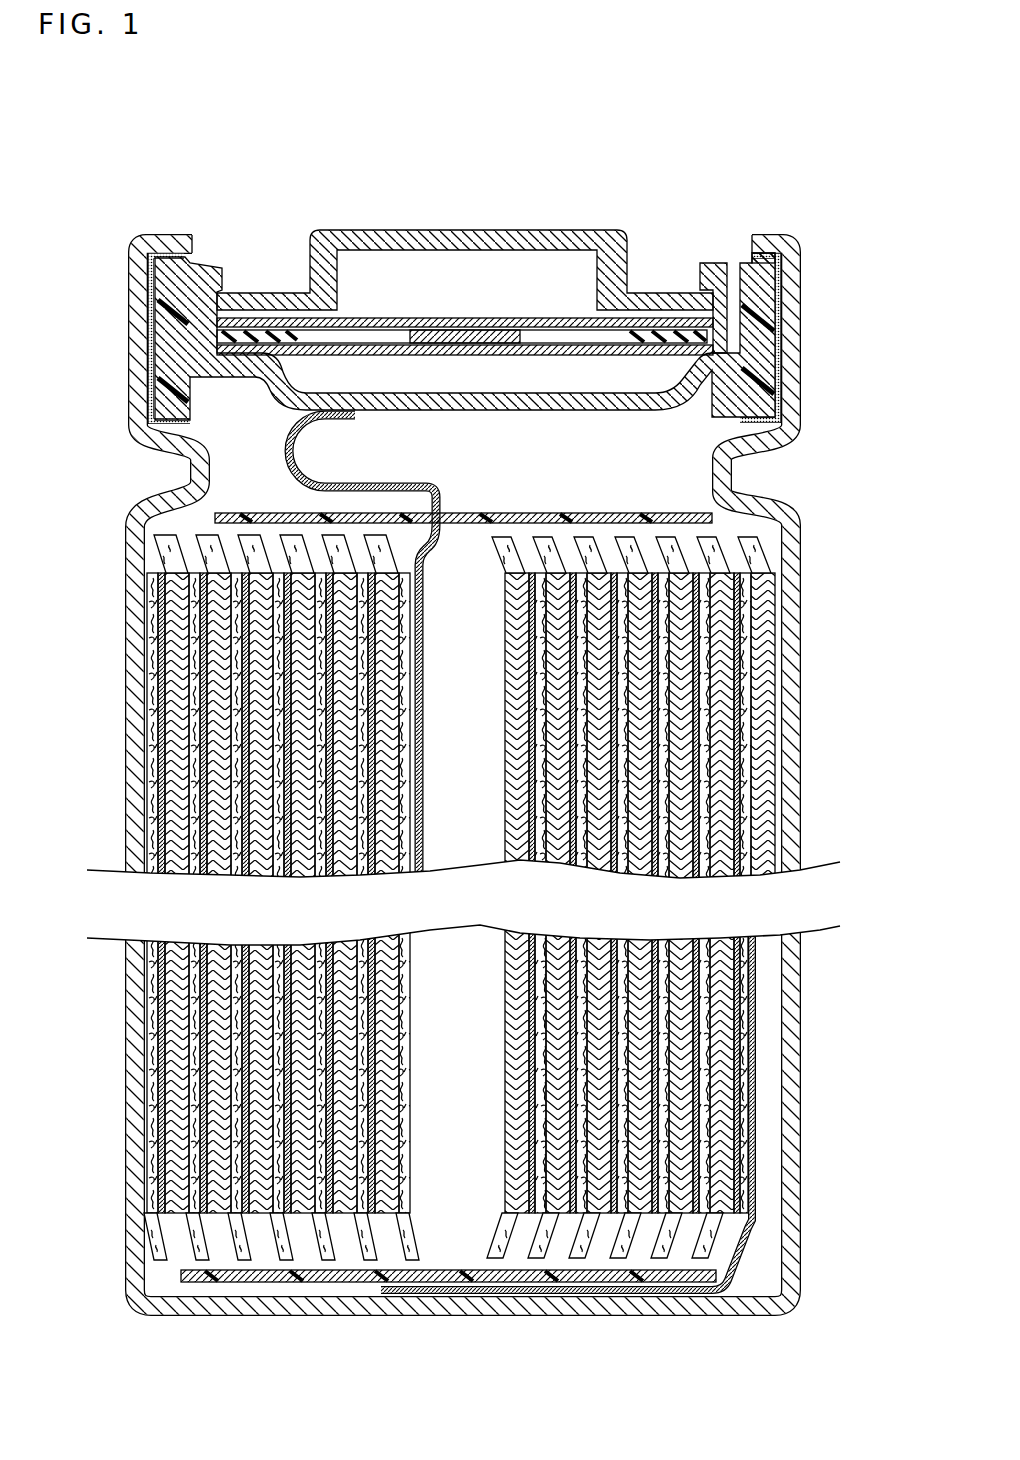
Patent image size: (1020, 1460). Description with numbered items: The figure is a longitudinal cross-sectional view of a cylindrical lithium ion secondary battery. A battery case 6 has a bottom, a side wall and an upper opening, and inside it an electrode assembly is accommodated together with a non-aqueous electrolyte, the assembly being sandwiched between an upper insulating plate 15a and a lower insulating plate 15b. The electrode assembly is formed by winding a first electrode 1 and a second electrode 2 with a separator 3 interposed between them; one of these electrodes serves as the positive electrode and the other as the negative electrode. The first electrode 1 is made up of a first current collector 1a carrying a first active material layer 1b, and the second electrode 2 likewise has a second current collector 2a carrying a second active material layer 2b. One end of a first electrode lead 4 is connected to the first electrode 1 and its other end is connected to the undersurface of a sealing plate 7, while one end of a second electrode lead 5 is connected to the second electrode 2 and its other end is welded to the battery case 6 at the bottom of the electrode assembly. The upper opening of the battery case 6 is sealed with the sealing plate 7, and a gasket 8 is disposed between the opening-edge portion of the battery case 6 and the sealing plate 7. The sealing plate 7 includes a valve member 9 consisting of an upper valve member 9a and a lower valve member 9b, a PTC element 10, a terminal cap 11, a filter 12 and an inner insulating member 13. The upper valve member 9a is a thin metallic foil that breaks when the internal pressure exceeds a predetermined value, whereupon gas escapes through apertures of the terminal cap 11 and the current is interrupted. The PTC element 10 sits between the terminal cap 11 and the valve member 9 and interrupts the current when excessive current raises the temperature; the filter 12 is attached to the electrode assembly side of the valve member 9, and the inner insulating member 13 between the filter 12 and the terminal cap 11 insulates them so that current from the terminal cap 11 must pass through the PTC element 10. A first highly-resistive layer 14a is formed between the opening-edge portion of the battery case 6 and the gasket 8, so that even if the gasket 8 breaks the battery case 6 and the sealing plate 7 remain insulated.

The first electrode 1 is at (858, 748).
The first current collector 1a is at (716, 763).
The first active material layer 1b is at (714, 842).
The second electrode 2 is at (867, 625).
The second current collector 2a is at (745, 636).
The second active material layer 2b is at (752, 722).
The separator 3 is at (779, 556).
The first electrode lead 4 is at (294, 451).
The second electrode lead 5 is at (770, 1290).
The battery case 6 is at (784, 1084).
The sealing plate 7 is at (498, 241).
The gasket 8 is at (752, 373).
The valve member 9 is at (465, 272).
The upper valve member 9a is at (364, 318).
The lower valve member 9b is at (386, 344).
The PTC element 10 is at (654, 332).
The terminal cap 11 is at (548, 248).
The filter 12 is at (722, 267).
The inner insulating member 13 is at (748, 252).
The first highly-resistive layer 14a is at (781, 278).
The upper insulating plate 15a is at (548, 513).
The lower insulating plate 15b is at (305, 1283).